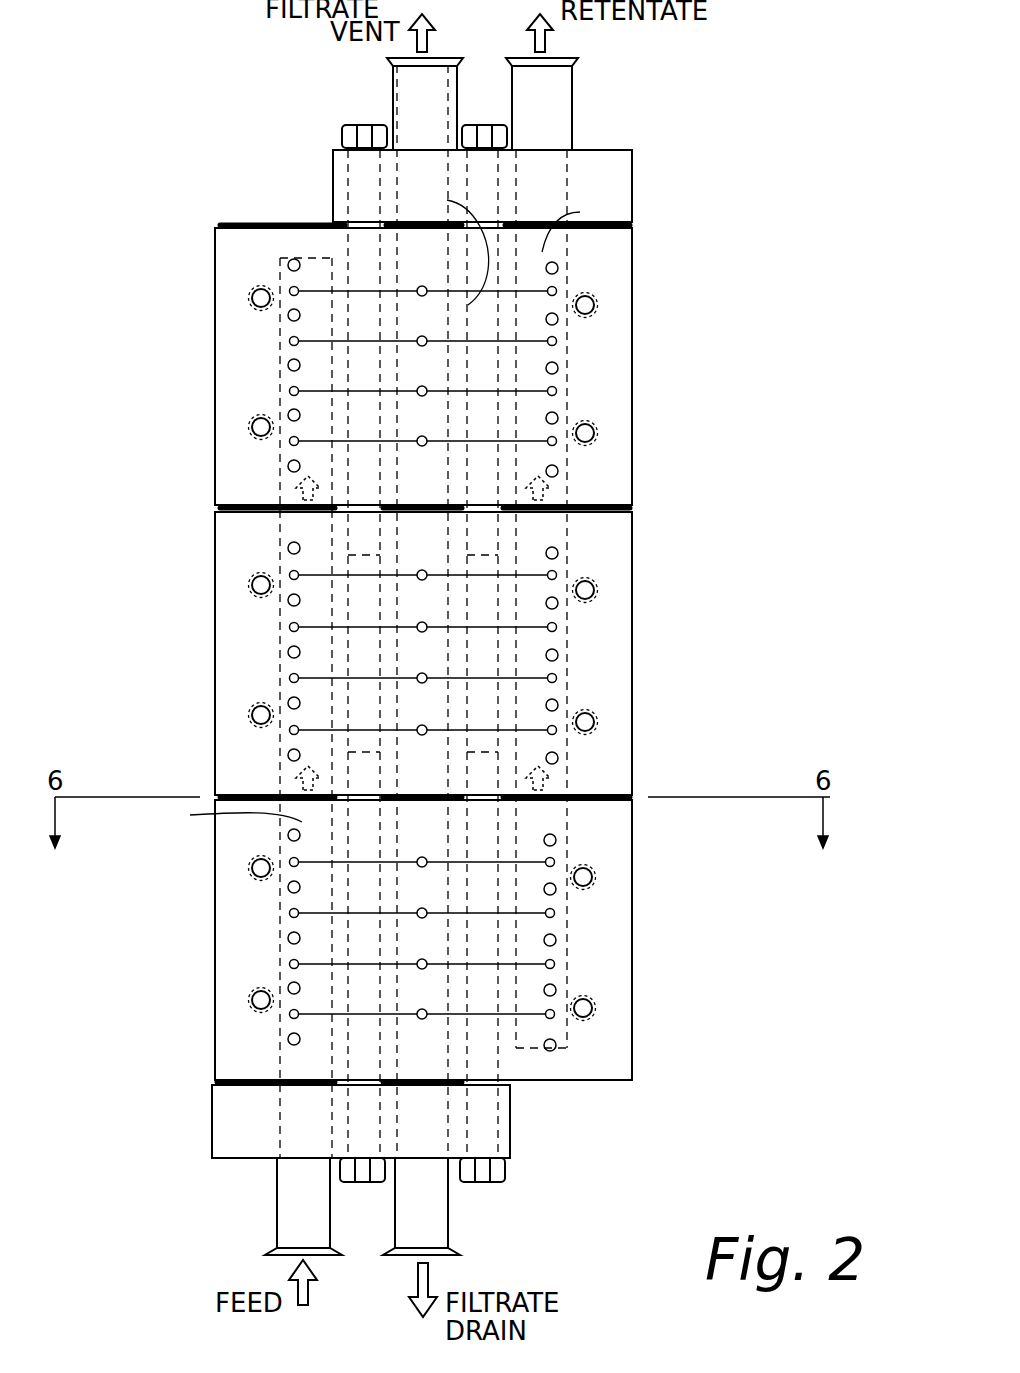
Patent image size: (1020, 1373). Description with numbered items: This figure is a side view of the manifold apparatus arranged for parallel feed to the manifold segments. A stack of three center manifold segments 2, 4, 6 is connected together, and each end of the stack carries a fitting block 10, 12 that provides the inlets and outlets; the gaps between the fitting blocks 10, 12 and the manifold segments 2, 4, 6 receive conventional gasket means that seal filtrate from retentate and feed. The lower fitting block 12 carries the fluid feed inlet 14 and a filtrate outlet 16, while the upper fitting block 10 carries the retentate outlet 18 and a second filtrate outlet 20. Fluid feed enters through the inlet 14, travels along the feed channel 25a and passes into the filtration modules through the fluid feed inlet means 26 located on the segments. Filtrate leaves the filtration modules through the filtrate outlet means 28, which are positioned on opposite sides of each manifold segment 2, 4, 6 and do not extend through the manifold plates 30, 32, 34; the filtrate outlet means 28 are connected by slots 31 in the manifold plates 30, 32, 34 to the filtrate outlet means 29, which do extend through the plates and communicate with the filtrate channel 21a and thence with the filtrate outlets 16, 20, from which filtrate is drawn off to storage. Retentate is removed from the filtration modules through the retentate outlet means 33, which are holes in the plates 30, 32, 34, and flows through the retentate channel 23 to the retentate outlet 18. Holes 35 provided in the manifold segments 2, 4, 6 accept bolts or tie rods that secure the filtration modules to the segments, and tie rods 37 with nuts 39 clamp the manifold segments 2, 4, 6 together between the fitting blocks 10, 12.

The center manifold segment 2 is at (642, 273).
The center manifold segment 4 is at (642, 553).
The center manifold segment 6 is at (642, 898).
The fitting block 10 is at (632, 182).
The fitting block 12 is at (212, 1105).
The fluid feed inlet 14 is at (277, 1210).
The filtrate outlet 16 is at (450, 1222).
The retentate outlet 18 is at (572, 93).
The filtrate outlet 20 is at (393, 88).
The filtrate channel 21a is at (444, 244).
The retentate channel 23 is at (579, 218).
The feed channel 25a is at (221, 811).
The fluid feed inlet means 26 is at (289, 262).
The filtrate outlet means 28 is at (289, 288).
The filtrate outlet means 29 is at (422, 436).
The manifold plate 30 is at (620, 392).
The slot 31 is at (358, 445).
The manifold plate 32 is at (622, 667).
The retentate outlet means 33 is at (557, 266).
The manifold plate 34 is at (622, 966).
The hole 35 is at (250, 298).
The tie rod 37 is at (350, 192).
The nut 39 is at (340, 133).